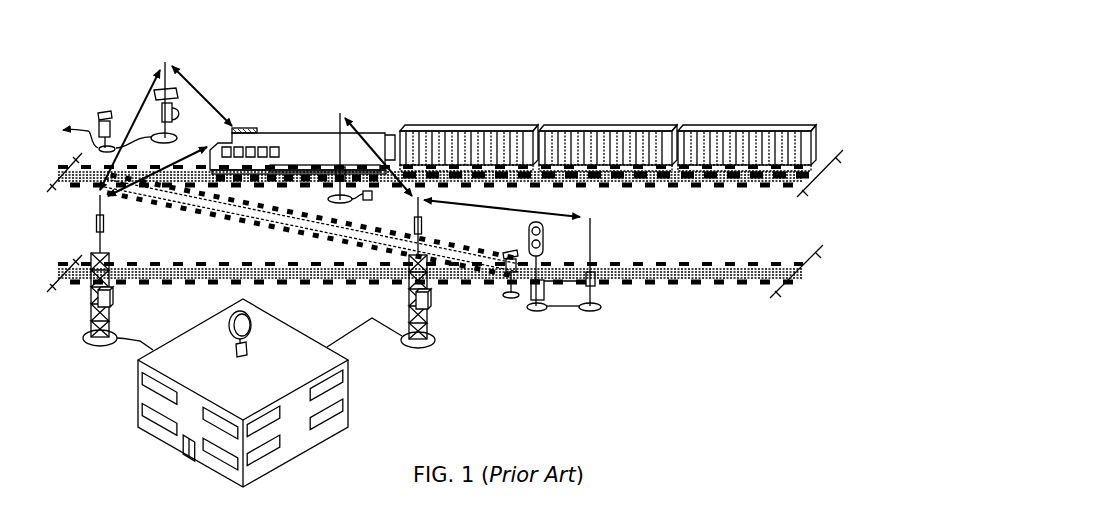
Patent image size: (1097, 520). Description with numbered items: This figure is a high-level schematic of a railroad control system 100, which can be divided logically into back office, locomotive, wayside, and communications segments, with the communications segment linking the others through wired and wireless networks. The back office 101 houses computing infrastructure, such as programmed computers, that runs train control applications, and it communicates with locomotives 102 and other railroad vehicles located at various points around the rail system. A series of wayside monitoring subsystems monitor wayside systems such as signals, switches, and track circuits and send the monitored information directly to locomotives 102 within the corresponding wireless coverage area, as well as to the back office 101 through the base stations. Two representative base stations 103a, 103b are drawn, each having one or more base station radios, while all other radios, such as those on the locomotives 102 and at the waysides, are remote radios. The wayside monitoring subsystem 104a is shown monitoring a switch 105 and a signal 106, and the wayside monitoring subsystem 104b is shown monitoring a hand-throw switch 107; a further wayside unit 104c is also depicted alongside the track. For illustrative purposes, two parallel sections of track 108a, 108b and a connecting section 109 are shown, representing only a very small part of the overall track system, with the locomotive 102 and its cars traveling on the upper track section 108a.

The railroad control system 100 is at (516, 37).
The back office 101 is at (139, 403).
The locomotive 102 is at (378, 126).
The base station 103a is at (113, 297).
The base station 103b is at (434, 297).
The wayside monitoring subsystem 104a is at (594, 288).
The wayside monitoring subsystem 104b is at (177, 131).
The wayside antenna 104c is at (329, 199).
The switch 105 is at (508, 250).
The signal 106 is at (545, 232).
The hand-throw switch 107 is at (96, 112).
The section of track 108a is at (722, 186).
The section of track 108b is at (722, 288).
The connecting section 109 is at (267, 226).